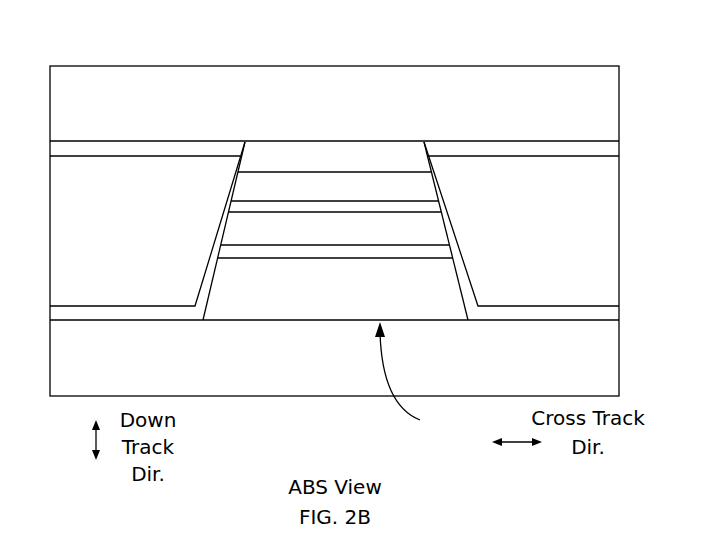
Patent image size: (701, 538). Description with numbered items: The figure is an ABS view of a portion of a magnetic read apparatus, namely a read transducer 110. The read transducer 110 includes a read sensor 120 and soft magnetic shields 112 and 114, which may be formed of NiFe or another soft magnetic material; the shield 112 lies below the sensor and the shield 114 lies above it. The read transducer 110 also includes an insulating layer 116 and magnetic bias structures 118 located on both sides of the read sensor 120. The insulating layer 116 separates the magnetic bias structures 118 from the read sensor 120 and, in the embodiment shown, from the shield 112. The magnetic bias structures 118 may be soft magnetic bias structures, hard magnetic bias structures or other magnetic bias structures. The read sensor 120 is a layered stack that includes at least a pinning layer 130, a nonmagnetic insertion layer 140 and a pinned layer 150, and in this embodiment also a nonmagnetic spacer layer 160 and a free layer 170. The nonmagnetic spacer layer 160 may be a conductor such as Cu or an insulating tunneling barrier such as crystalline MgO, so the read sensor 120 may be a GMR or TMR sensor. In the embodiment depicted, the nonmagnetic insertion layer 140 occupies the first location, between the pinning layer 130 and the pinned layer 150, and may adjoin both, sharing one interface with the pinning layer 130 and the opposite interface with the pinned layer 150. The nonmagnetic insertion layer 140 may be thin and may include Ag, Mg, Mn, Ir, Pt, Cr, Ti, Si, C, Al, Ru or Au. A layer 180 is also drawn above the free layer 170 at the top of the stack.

The read transducer 110 is at (317, 32).
The shield 112 is at (334, 352).
The shield 114 is at (334, 114).
The insulating layer 116 is at (50, 313).
The magnetic bias structures 118 is at (334, 224).
The read sensor 120 is at (418, 377).
The pinning layer 130 is at (335, 287).
The nonmagnetic insertion layer 140 is at (213, 258).
The pinned layer 150 is at (335, 231).
The nonmagnetic spacer layer 160 is at (438, 208).
The free layer 170 is at (335, 188).
The capping layer 180 is at (334, 158).